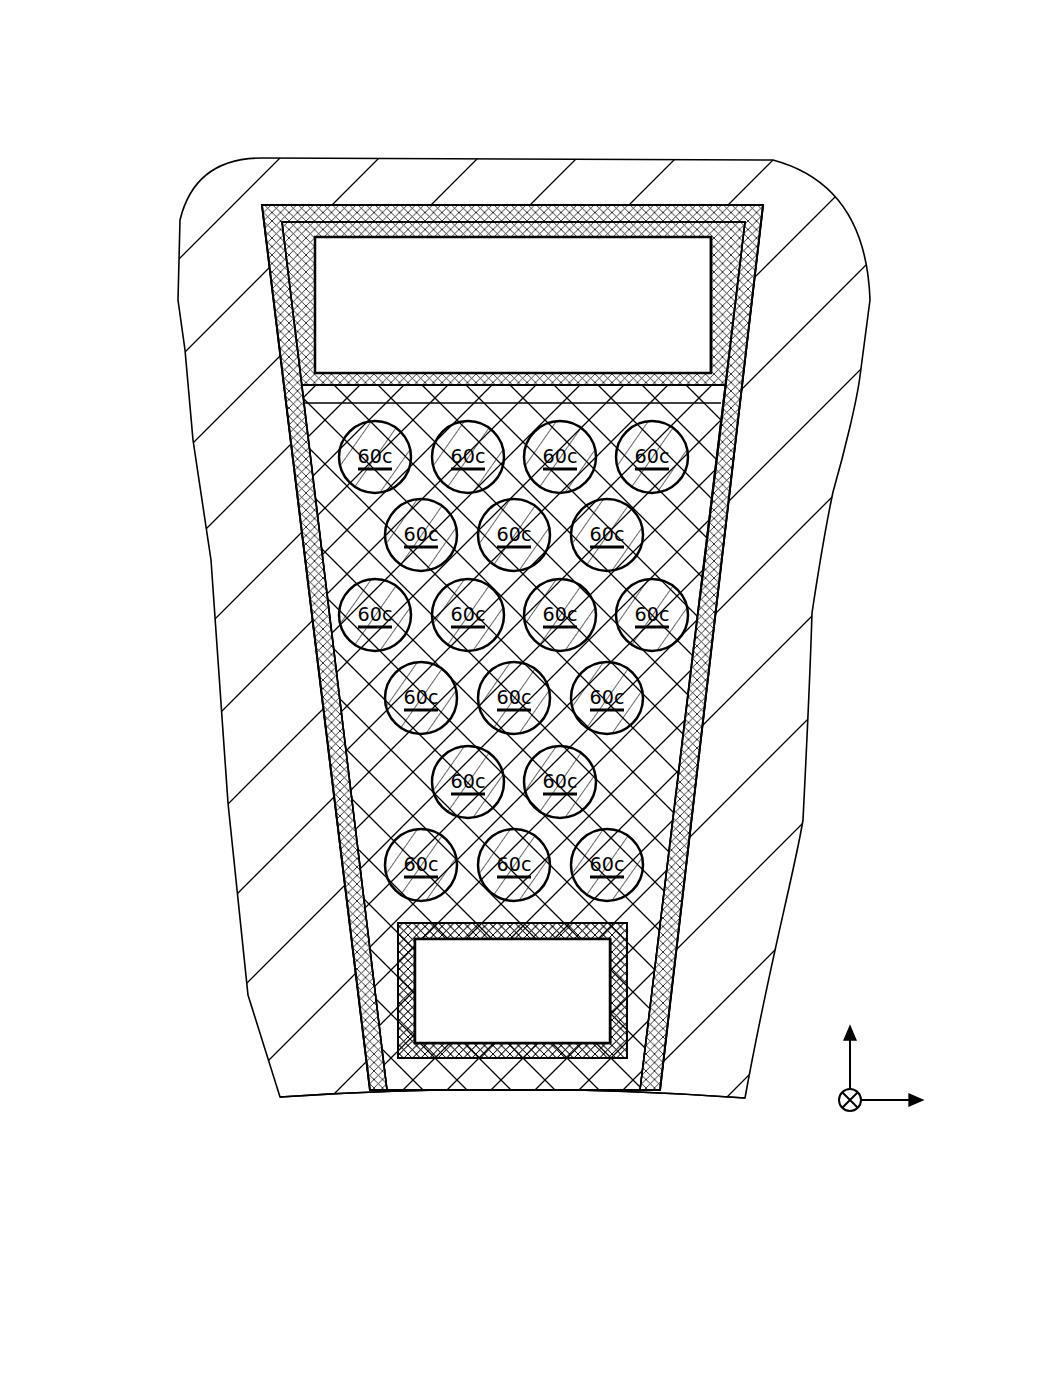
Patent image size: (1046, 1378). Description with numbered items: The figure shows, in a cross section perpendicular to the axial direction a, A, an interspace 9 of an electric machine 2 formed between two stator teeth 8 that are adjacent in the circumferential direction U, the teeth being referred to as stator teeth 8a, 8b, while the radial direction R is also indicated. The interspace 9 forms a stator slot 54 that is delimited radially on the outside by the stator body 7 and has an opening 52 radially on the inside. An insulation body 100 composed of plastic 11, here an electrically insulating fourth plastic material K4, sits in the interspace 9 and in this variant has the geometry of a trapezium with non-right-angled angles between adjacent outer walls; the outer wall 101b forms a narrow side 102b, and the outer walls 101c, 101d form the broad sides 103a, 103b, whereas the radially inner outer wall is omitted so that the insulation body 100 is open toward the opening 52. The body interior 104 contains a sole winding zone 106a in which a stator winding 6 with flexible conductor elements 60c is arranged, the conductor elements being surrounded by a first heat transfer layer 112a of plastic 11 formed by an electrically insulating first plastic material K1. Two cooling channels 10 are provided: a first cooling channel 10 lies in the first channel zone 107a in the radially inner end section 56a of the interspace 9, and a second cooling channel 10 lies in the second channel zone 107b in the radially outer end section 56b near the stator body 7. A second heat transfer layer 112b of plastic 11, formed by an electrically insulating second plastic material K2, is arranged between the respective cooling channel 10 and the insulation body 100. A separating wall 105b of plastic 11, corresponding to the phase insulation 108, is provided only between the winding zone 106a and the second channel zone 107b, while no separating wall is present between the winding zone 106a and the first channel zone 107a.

The electric machine 2 is at (863, 142).
The stator body 7 is at (744, 154).
The stator teeth 8 is at (516, 628).
The stator tooth 8a is at (222, 590).
The stator tooth 8b is at (815, 614).
The interspace 9 is at (512, 1161).
The stator slot 54 is at (478, 1108).
The opening 52 is at (510, 1098).
The radially inner end section 56a is at (322, 1050).
The radially outer end section 56b is at (240, 281).
The stator winding 6 is at (646, 405).
The flexible conductor elements 60c is at (513, 661).
The cooling channel 10 is at (531, 300).
The plastic 11 is at (492, 594).
The insulation body 100 is at (508, 594).
The fourth plastic material K4 is at (690, 873).
The outer wall 101b is at (513, 160).
The narrow side 102b is at (511, 212).
The outer wall 101c is at (234, 656).
The broad side 103a is at (328, 772).
The outer wall 101d is at (787, 656).
The broad side 103b is at (700, 776).
The winding zone 106a is at (698, 582).
The second heat transfer layer 112b is at (447, 631).
The second plastic material K2 is at (300, 246).
The first channel zone 107a is at (644, 963).
The second channel zone 107b is at (732, 278).
The first heat transfer layer 112a is at (431, 696).
The first plastic material K1 is at (431, 696).
The body interior 104 is at (360, 692).
The separating wall 105b is at (514, 360).
The phase insulation 108 is at (412, 398).
The radial direction R is at (852, 1060).
The circumferential direction U is at (880, 1108).
The axial direction A is at (846, 1134).
The axial direction a is at (850, 1112).